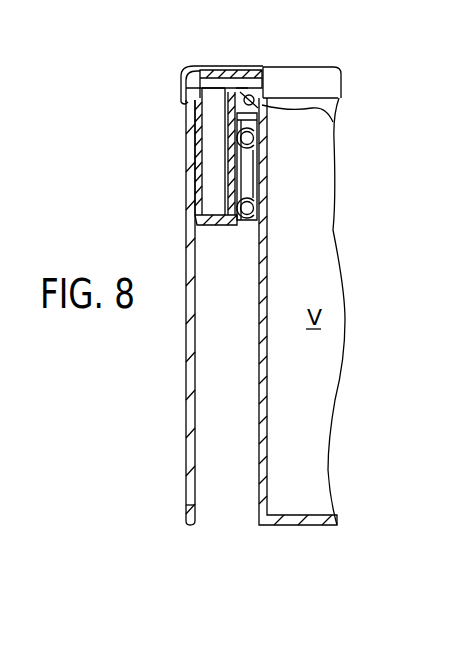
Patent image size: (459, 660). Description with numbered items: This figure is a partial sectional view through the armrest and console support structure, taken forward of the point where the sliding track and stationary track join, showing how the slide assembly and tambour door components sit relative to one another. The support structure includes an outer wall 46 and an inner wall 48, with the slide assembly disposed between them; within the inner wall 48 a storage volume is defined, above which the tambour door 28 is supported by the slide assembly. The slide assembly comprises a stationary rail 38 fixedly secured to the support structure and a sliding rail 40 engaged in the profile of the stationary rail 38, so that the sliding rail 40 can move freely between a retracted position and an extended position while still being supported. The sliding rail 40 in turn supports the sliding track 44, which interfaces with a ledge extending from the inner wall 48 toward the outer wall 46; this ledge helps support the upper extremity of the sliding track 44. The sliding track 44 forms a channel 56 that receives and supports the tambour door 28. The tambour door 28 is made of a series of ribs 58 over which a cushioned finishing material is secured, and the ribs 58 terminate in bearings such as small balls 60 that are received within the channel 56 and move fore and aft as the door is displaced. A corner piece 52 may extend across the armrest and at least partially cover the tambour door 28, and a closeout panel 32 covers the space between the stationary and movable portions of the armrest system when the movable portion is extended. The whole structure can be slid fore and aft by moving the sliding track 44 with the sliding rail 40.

The tambour door 28 is at (300, 80).
The closeout panel 32 is at (192, 168).
The stationary rail 38 is at (240, 185).
The sliding rail 40 is at (252, 172).
The sliding track 44 is at (228, 188).
The outer wall 46 is at (186, 503).
The inner wall 48 is at (267, 490).
The corner piece 52 is at (183, 77).
The channel 56 is at (223, 77).
The ribs 58 is at (333, 122).
The balls 60 is at (248, 94).